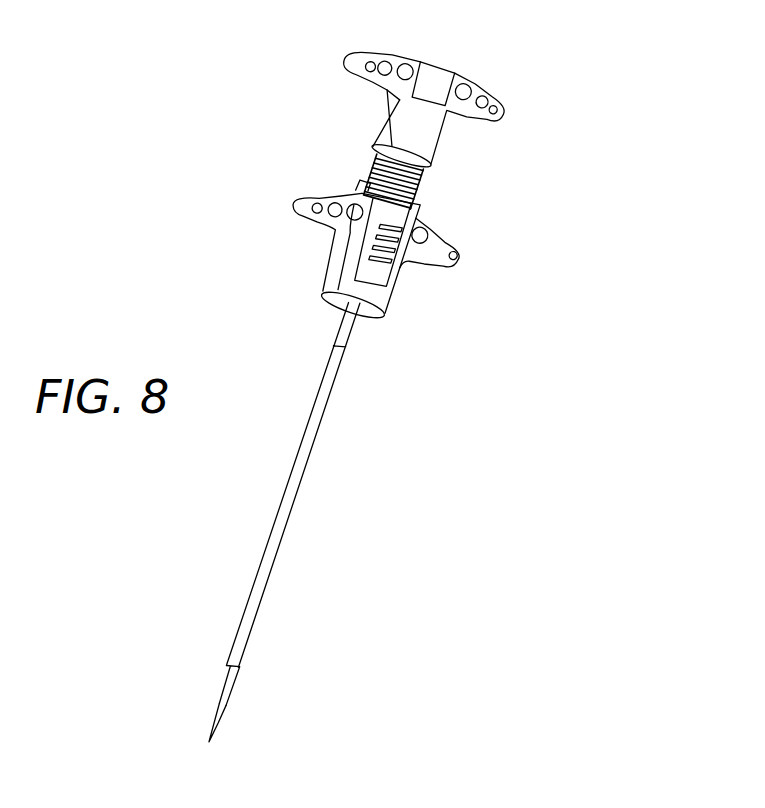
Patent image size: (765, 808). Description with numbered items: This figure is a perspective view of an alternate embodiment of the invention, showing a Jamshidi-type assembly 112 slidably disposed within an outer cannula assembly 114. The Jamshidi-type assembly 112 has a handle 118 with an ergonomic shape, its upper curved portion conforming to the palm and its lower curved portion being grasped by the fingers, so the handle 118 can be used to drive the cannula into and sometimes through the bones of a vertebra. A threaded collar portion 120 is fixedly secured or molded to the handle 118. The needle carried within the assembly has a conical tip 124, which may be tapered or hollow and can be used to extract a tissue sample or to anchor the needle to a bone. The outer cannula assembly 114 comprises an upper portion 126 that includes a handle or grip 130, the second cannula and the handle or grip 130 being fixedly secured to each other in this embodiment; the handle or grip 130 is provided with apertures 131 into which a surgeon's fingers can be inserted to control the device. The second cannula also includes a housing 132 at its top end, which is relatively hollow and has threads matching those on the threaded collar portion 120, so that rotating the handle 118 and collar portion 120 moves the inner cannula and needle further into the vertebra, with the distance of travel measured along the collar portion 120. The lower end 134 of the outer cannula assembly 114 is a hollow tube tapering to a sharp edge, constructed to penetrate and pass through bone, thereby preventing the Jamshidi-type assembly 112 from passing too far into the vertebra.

The Jamshidi-type assembly 112 is at (493, 95).
The outer cannula assembly 114 is at (333, 384).
The handle 118 is at (348, 58).
The threaded collar portion 120 is at (423, 173).
The conical tip 124 is at (220, 720).
The upper portion 126 is at (430, 233).
The handle or grip 130 is at (297, 200).
The apertures 131 is at (362, 187).
The housing 132 is at (330, 256).
The lower end 134 is at (217, 703).